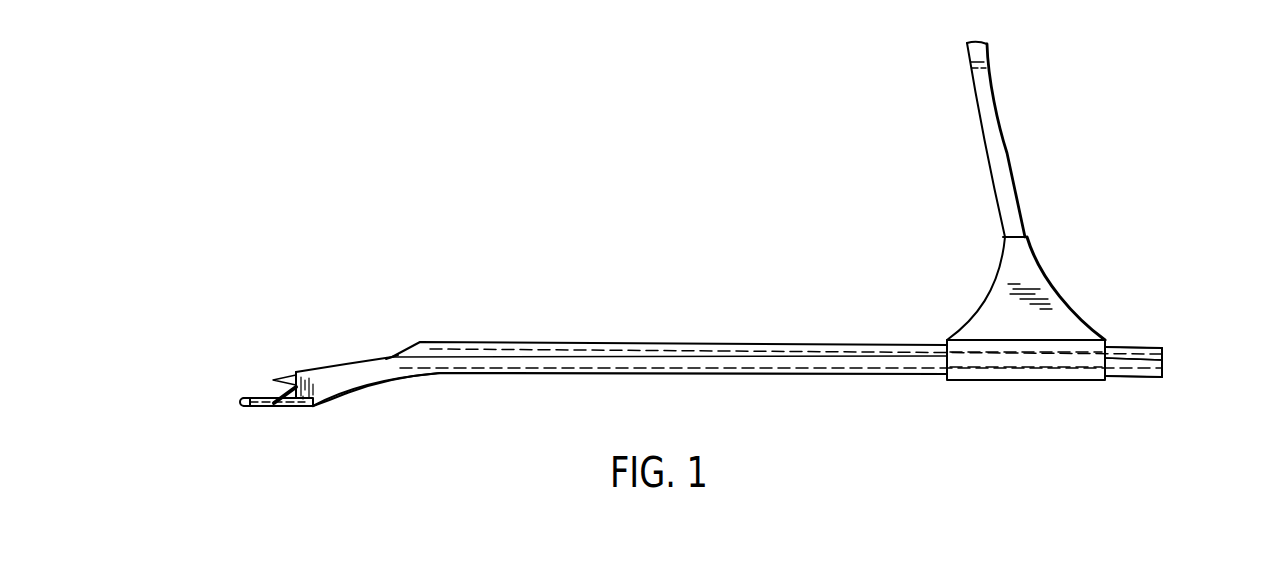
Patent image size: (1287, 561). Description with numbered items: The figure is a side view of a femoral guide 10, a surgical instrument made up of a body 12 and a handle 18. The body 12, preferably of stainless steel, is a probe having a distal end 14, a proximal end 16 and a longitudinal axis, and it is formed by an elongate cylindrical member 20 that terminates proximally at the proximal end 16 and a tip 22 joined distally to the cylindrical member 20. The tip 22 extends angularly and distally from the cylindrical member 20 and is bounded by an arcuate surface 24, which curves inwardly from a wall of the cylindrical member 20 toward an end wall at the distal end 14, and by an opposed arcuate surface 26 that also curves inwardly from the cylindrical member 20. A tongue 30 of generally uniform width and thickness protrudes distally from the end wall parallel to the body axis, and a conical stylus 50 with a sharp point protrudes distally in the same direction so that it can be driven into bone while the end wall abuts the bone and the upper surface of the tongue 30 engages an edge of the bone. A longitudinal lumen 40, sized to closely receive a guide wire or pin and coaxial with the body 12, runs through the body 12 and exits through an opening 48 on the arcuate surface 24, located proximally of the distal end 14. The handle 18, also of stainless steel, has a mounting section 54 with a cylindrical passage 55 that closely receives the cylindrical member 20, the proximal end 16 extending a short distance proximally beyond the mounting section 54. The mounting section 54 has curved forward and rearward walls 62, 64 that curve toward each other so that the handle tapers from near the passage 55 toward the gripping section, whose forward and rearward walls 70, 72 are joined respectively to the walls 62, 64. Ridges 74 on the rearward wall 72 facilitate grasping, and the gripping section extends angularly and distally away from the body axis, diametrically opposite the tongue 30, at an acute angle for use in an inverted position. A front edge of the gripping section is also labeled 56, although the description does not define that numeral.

The femoral guide 10 is at (701, 184).
The body 12 is at (664, 378).
The distal end 14 is at (262, 407).
The proximal end 16 is at (1167, 349).
The handle 18 is at (990, 382).
The cylindrical member 20 is at (735, 345).
The tip 22 is at (377, 385).
The arcuate surface 24 is at (338, 366).
The opposed arcuate surface 26 is at (347, 393).
The tongue 30 is at (247, 398).
The lumen 40 is at (556, 354).
The opening 48 is at (394, 350).
The stylus 50 is at (281, 373).
The mounting section 54 is at (1060, 298).
The cylindrical passage 55 is at (945, 360).
The front edge of stalk 56 is at (977, 108).
The forward wall 62 is at (980, 300).
The rearward wall 64 is at (1033, 270).
The forward wall 70 is at (997, 193).
The rearward wall 72 is at (990, 90).
The ridges 74 is at (1007, 152).